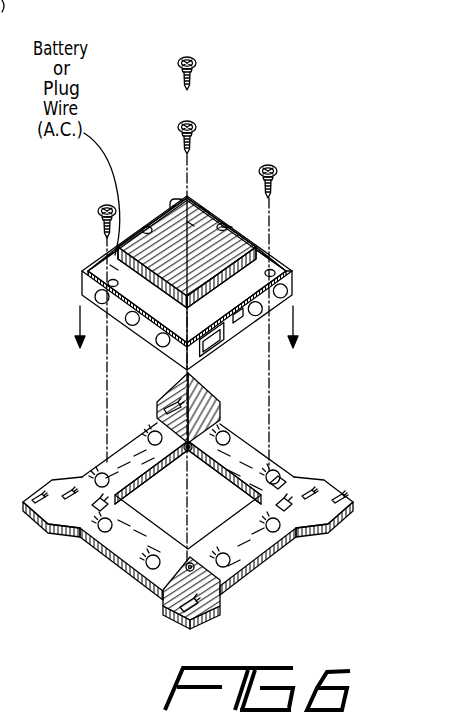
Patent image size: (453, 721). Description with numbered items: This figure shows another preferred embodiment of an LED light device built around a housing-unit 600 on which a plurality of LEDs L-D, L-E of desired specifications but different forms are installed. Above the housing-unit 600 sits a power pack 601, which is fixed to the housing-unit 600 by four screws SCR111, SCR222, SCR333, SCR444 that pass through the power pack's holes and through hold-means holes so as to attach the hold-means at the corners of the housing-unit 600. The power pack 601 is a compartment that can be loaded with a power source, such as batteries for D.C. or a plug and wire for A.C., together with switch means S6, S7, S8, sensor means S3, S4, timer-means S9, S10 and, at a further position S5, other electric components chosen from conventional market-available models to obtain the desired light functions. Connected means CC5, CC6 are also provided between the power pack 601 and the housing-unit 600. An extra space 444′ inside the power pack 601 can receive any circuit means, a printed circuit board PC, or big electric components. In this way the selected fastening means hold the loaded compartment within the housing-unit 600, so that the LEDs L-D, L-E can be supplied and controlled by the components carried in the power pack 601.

The screw SCR222 is at (200, 58).
The screw SCR333 is at (195, 118).
The screw SCR444 is at (100, 200).
The screw SCR111 is at (274, 165).
The connector CC5 is at (163, 186).
The connector CC6 is at (253, 345).
The power pack 601 is at (190, 216).
The printed circuit board PC is at (110, 282).
The sensor means S3 is at (292, 282).
The sensor means S4 is at (272, 260).
The side S5 is at (265, 306).
The switch means S6 is at (142, 356).
The switch means S7 is at (118, 326).
The switch means S8 is at (80, 292).
The timer-means S9 is at (206, 202).
The timer-means S10 is at (240, 224).
The extra space 444′ is at (116, 262).
The housing-unit 600 is at (110, 560).
The LED L-D is at (238, 437).
The LED L-E is at (280, 470).